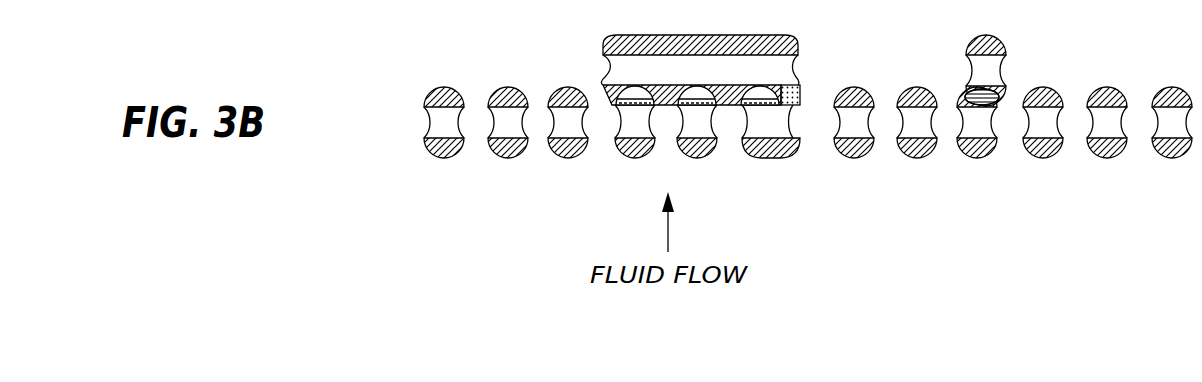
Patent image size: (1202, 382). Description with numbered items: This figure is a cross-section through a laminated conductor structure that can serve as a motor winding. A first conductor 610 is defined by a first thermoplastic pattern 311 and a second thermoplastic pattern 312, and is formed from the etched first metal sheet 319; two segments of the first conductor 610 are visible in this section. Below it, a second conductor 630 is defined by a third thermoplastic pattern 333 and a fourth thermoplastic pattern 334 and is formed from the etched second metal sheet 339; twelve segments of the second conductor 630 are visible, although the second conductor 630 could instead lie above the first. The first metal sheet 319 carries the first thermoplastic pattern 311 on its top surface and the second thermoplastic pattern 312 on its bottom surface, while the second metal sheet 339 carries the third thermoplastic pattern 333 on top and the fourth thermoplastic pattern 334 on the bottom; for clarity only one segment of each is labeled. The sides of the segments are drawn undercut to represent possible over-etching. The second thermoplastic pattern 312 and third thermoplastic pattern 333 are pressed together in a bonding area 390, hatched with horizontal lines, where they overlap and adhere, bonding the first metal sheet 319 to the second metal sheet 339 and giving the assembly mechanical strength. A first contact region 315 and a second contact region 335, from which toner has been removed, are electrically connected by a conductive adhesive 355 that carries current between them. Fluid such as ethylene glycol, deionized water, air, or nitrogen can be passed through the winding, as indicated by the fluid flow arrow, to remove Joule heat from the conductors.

The first conductor 610 is at (657, 103).
The second conductor 630 is at (410, 120).
The first metal sheet 319 is at (604, 68).
The second contact region 335 is at (789, 72).
The conductive adhesive 355 is at (801, 95).
The first contact region 315 is at (790, 118).
The bonding area 390 is at (961, 105).
The first thermoplastic pattern 311 is at (1006, 50).
The second thermoplastic pattern 312 is at (1000, 93).
The third thermoplastic pattern 333 is at (1125, 100).
The second metal sheet 339 is at (1030, 121).
The fourth thermoplastic pattern 334 is at (1088, 148).